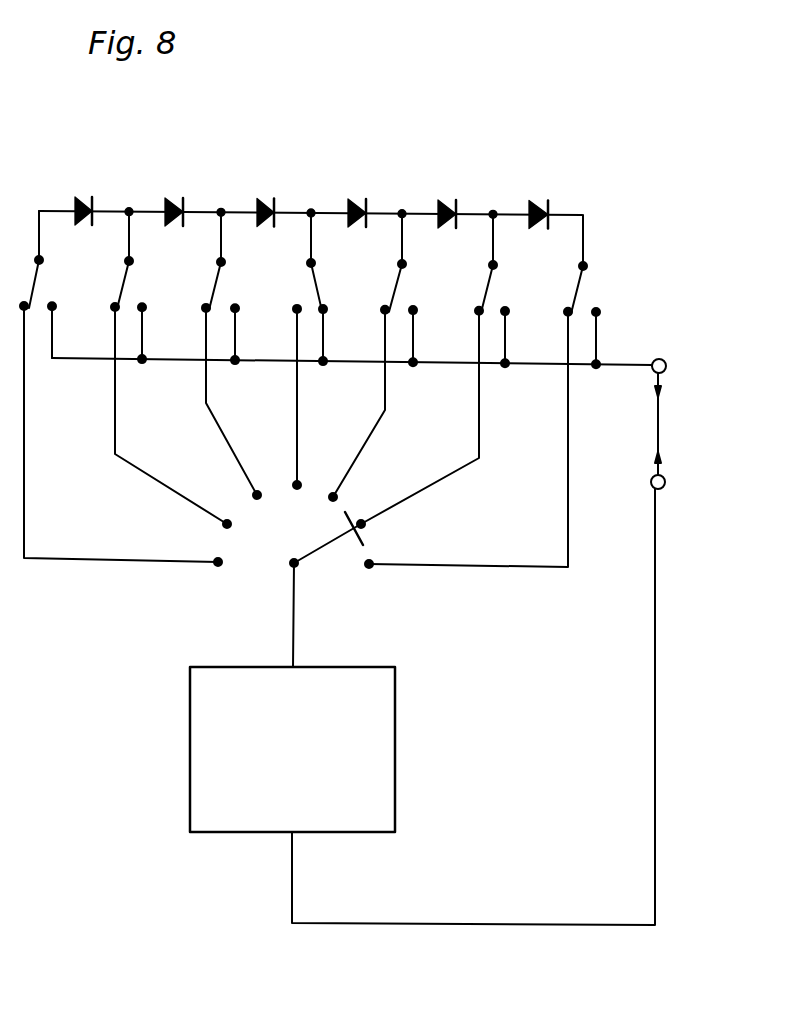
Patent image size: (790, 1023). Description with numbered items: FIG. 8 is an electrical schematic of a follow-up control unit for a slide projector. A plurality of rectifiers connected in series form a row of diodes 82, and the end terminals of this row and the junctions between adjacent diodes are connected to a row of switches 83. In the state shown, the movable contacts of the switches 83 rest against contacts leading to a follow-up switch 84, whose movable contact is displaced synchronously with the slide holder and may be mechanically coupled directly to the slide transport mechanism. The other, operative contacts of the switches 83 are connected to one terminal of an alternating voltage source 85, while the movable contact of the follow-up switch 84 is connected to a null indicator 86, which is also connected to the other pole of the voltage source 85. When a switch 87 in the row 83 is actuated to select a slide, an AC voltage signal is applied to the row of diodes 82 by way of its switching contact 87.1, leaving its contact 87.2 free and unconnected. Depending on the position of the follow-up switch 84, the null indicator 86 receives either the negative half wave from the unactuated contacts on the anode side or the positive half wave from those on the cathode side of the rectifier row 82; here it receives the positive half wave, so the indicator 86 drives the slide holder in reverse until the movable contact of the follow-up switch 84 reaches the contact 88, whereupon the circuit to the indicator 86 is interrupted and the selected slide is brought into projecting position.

The row of diodes 82 is at (372, 183).
The row of switches 83 is at (363, 289).
The follow-up switch 84 is at (325, 545).
The alternating voltage source 85 is at (482, 642).
The null indicator 86 is at (190, 775).
The switch 87 is at (314, 289).
The switching contact 87.1 is at (323, 309).
The contact 87.2 is at (297, 309).
The contact 88 is at (297, 485).